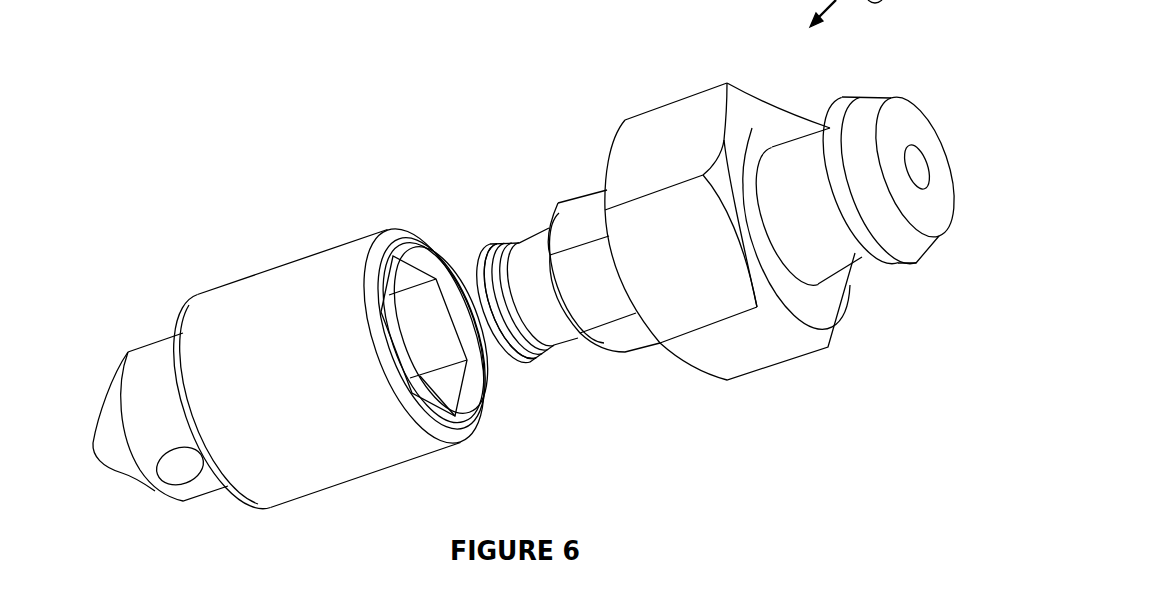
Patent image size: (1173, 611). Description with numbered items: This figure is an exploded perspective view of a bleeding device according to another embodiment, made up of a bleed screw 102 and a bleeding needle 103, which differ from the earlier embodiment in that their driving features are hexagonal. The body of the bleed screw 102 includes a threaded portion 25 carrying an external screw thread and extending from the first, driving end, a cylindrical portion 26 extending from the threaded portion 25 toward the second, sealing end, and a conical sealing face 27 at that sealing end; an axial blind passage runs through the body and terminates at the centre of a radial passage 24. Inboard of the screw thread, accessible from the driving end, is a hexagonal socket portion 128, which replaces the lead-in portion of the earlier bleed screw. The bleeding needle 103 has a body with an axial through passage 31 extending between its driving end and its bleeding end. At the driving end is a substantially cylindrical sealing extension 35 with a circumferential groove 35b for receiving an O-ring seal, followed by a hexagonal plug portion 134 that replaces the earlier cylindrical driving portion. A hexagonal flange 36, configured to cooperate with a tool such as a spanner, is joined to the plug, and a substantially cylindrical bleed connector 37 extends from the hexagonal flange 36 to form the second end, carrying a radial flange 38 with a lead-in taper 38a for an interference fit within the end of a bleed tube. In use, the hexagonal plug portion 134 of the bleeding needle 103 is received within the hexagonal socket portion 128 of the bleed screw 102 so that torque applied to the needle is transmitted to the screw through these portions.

The bleed screw 102 is at (247, 220).
The bleeding needle 103 is at (771, 412).
The threaded portion 25 is at (311, 402).
The cylindrical portion 26 is at (166, 432).
The conical sealing face 27 is at (123, 472).
The radial passage 24 is at (190, 473).
The hexagonal socket portion 128 is at (450, 353).
The sealing extension 35 is at (573, 343).
The circumferential groove 35b is at (512, 258).
The hexagonal plug portion 134 is at (617, 298).
The hexagonal flange 36 is at (699, 275).
The bleed connector 37 is at (815, 152).
The radial flange 38 is at (893, 258).
The lead-in taper 38a is at (918, 240).
The axial through passage 31 is at (921, 167).